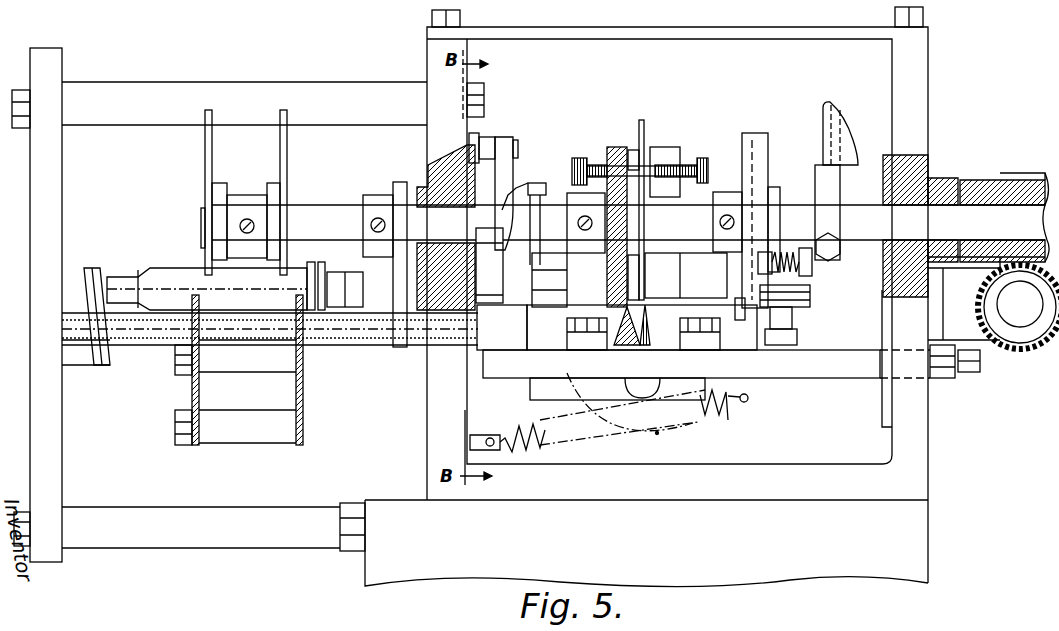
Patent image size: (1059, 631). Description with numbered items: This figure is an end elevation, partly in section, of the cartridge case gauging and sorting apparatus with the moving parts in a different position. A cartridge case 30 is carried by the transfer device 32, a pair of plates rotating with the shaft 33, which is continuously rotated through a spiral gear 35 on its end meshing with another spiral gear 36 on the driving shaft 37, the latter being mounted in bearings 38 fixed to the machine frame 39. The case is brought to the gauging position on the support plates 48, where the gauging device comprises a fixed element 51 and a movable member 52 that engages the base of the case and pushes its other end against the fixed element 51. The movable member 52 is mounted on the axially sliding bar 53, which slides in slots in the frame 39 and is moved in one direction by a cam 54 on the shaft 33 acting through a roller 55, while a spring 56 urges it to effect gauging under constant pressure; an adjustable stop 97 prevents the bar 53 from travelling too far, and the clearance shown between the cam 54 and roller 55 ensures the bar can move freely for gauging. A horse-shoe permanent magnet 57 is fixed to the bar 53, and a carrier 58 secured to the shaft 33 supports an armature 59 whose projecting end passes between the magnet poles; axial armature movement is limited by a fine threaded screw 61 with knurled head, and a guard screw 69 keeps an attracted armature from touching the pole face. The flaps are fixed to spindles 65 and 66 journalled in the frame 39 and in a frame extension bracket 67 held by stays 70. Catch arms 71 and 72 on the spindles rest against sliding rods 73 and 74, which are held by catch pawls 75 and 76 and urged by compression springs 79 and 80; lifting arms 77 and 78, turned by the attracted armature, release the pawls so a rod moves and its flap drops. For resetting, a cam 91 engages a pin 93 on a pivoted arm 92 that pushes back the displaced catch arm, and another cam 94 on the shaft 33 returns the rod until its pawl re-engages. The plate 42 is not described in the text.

The cartridge case 30 is at (172, 270).
The transfer device 32 is at (284, 150).
The shaft 33 is at (334, 218).
The spiral gear 35 is at (1003, 175).
The spiral gear 36 is at (1028, 345).
The driving shaft 37 is at (992, 284).
The bearings 38 is at (968, 313).
The machine frame 39 is at (430, 68).
The plate 42 is at (402, 182).
The support plates 48 is at (293, 407).
The fixed element 51 is at (96, 280).
The movable member 52 is at (323, 278).
The axially sliding bar 53 is at (851, 378).
The cam 54 is at (758, 140).
The roller 55 is at (800, 306).
The spring 56 is at (713, 412).
The permanent magnet 57 is at (657, 434).
The carrier 58 is at (612, 147).
The armature 59 is at (643, 137).
The fine threaded screw 61 is at (572, 167).
The spindle 65 is at (224, 318).
The spindle 66 is at (254, 328).
The frame extension bracket 67 is at (48, 171).
The screw 69 is at (703, 158).
The stays 70 is at (352, 94).
The catch arm 71 is at (485, 256).
The catch arm 72 is at (520, 320).
The sliding rod 73 is at (562, 306).
The sliding rod 74 is at (597, 306).
The catch pawl 75 is at (610, 302).
The catch pawl 76 is at (680, 262).
The lifting arm 77 is at (641, 300).
The lifting arm 78 is at (646, 306).
The compression spring 79 is at (741, 300).
The compression spring 80 is at (755, 262).
The cam 91 is at (530, 183).
The pivoted arm 92 is at (502, 162).
The pin 93 is at (540, 183).
The cam 94 is at (843, 137).
The adjustable stop 97 is at (973, 380).